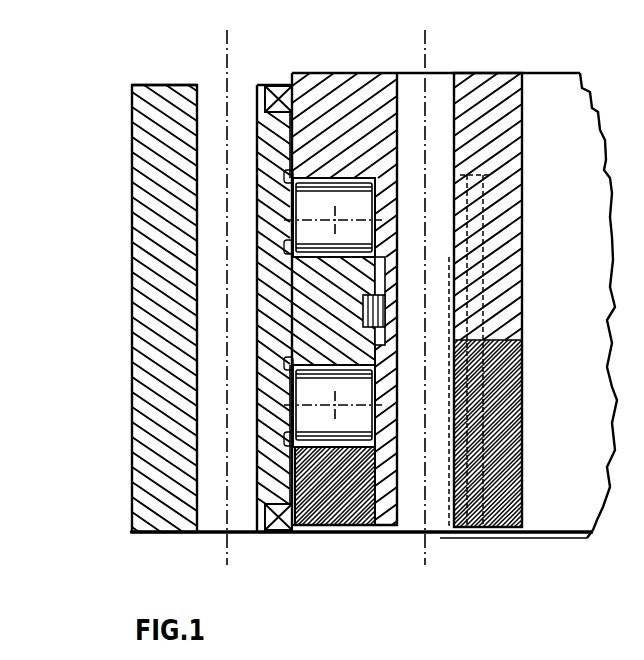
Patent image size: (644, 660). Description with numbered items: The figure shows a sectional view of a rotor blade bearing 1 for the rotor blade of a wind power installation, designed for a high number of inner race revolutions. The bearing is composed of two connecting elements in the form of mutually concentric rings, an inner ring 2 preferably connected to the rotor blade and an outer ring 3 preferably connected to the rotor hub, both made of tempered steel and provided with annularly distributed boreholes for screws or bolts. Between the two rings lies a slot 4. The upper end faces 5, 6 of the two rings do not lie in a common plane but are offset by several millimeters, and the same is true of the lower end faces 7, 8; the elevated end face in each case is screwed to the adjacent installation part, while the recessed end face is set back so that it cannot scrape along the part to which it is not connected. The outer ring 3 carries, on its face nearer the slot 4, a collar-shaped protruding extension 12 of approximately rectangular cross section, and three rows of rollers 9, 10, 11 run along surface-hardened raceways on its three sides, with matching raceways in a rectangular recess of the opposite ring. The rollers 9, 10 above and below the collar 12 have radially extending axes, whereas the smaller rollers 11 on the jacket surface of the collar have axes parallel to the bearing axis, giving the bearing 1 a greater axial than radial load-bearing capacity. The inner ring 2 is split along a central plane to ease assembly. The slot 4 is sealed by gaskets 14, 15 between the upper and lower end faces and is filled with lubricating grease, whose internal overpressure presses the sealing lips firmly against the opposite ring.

The rotor blade bearing 1 is at (132, 125).
The inner ring 2 is at (483, 110).
The outer ring 3 is at (149, 100).
The slot 4 is at (292, 373).
The upper end face 5 is at (338, 73).
The upper end face 6 is at (173, 86).
The lower end face 7 is at (497, 539).
The lower end face 8 is at (169, 534).
The roller 9 is at (296, 234).
The roller 10 is at (297, 418).
The roller 11 is at (386, 313).
The collar 12 is at (300, 289).
The gasket 14 is at (278, 87).
The gasket 15 is at (277, 531).